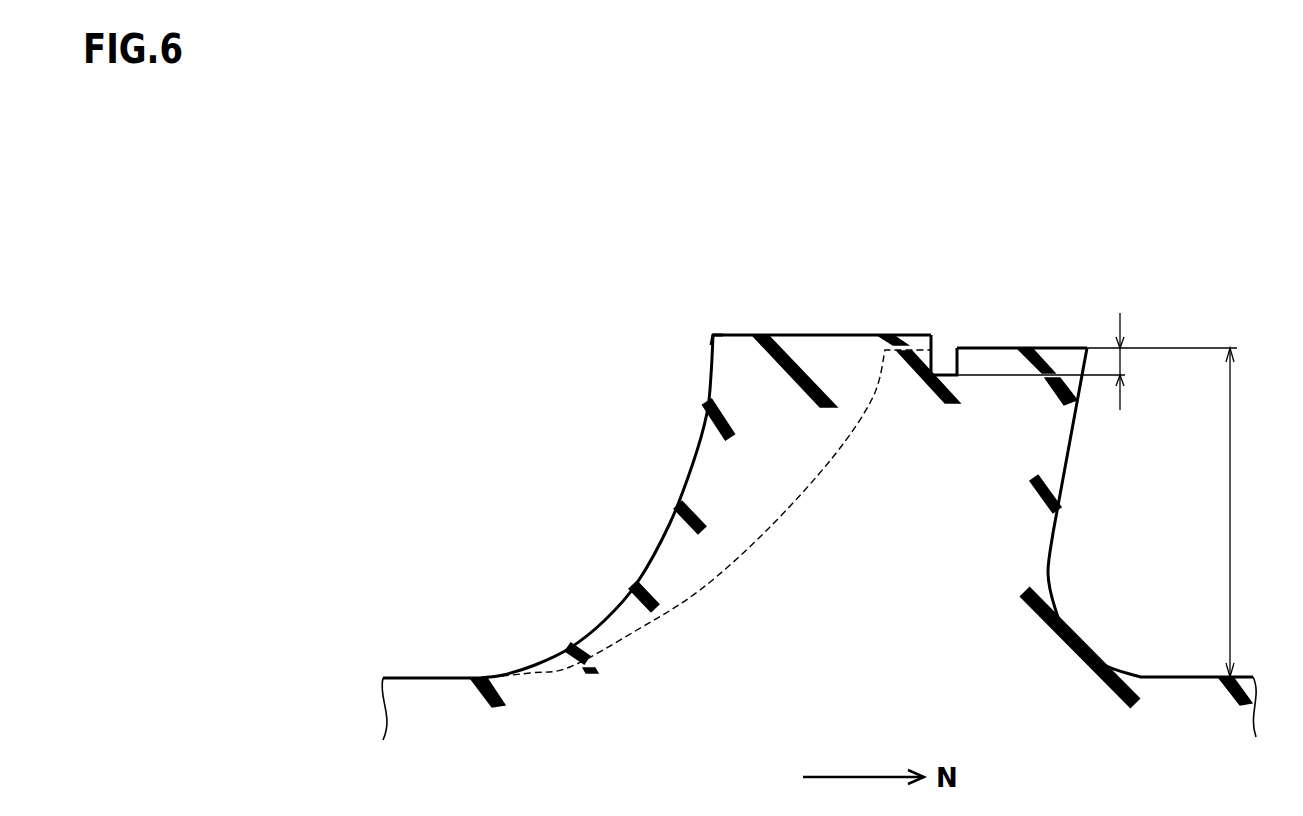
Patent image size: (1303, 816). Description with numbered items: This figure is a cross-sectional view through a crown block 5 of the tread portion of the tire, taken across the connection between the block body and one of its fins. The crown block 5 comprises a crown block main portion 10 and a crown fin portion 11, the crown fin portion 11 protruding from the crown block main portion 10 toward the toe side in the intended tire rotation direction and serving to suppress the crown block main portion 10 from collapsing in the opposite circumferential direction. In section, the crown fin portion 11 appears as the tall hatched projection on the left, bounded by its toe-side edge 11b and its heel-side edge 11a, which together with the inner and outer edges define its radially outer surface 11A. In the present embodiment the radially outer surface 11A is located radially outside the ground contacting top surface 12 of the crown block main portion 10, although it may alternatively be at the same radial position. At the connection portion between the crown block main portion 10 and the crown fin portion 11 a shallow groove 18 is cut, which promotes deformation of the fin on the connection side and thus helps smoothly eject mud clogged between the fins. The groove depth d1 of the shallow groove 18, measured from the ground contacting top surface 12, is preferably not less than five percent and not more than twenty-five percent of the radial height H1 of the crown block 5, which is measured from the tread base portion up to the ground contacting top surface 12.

The crown block 5 is at (768, 177).
The crown block main portion 10 is at (1034, 310).
The crown fin portion 11 is at (795, 290).
The radially outer surface 11A is at (745, 335).
The heel-side edge 11a is at (930, 336).
The toe-side edge 11b is at (713, 335).
The ground contacting top surface 12 is at (985, 346).
The shallow groove 18 is at (943, 343).
The groove depth d1 is at (1097, 361).
The radial height H1 is at (1251, 512).